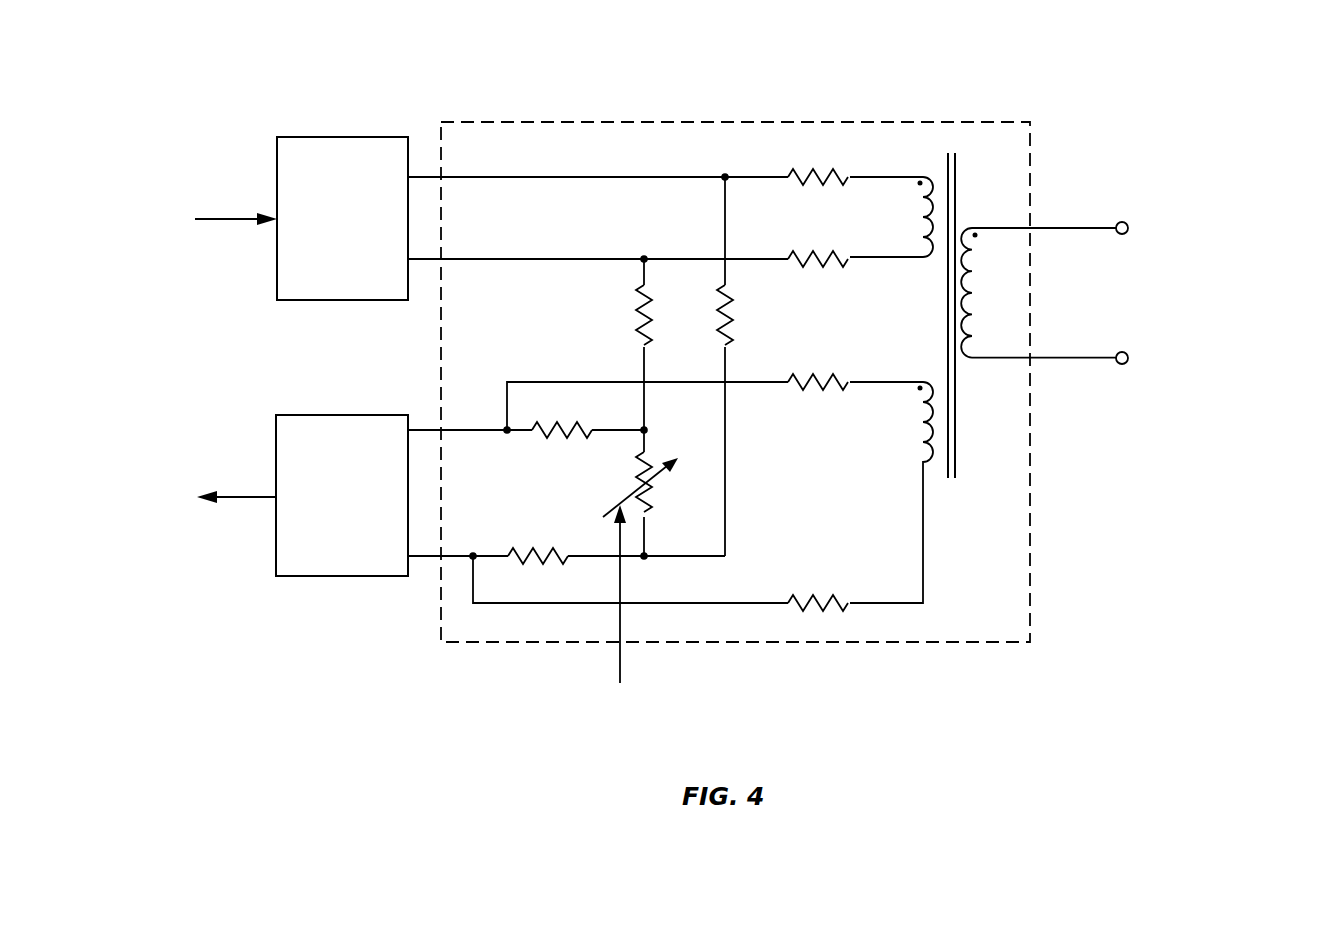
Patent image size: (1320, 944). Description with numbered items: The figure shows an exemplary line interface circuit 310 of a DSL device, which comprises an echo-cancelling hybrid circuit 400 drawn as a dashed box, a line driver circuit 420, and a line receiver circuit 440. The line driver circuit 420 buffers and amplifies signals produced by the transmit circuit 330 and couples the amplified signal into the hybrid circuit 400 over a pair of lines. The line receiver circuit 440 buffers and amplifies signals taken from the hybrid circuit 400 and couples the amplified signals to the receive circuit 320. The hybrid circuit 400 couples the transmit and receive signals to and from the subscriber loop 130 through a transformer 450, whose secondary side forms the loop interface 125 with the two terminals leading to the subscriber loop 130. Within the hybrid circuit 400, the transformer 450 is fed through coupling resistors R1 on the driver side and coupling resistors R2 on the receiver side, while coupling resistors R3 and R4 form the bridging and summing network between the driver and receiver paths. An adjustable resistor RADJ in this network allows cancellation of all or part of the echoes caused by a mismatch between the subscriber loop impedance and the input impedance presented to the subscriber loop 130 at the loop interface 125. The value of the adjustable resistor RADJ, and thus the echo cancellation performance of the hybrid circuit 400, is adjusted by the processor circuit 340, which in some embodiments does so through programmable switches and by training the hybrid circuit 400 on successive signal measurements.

The line interface circuit 310 is at (1042, 80).
The echo-cancelling hybrid circuit 400 is at (609, 158).
The line driver circuit 420 is at (322, 252).
The line receiver circuit 440 is at (322, 532).
The transformer 450 is at (957, 193).
The loop interface 125 is at (1063, 227).
The subscriber loop 130 is at (1210, 291).
The transmit circuit 330 is at (187, 210).
The receive circuit 320 is at (186, 488).
The processor circuit 340 is at (618, 619).
The coupling resistor R1 is at (818, 207).
The coupling resistor R2 is at (818, 482).
The coupling resistor R3 is at (687, 315).
The coupling resistor R4 is at (550, 477).
The adjustable resistor RADJ is at (625, 484).